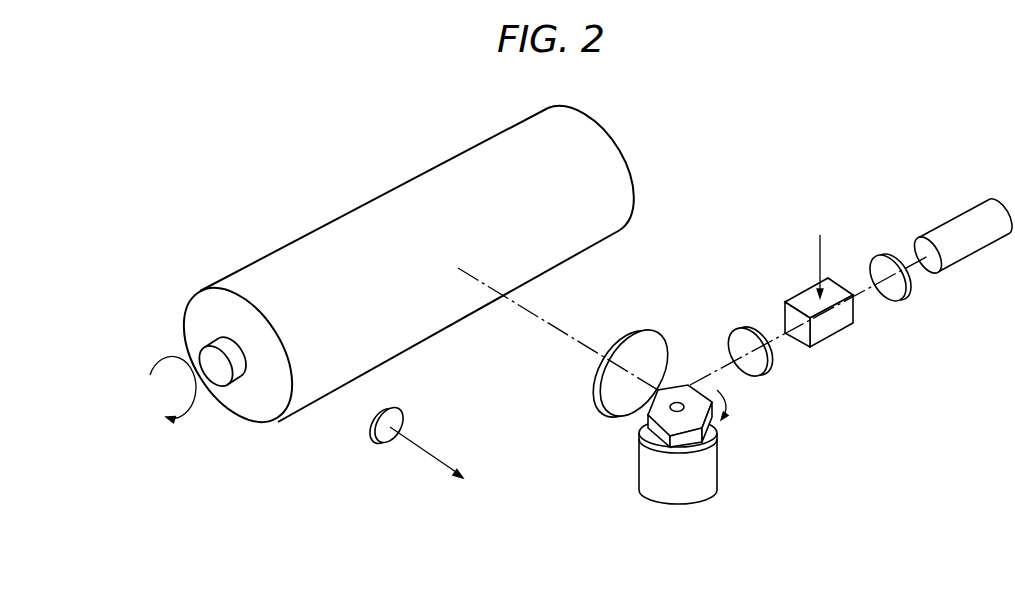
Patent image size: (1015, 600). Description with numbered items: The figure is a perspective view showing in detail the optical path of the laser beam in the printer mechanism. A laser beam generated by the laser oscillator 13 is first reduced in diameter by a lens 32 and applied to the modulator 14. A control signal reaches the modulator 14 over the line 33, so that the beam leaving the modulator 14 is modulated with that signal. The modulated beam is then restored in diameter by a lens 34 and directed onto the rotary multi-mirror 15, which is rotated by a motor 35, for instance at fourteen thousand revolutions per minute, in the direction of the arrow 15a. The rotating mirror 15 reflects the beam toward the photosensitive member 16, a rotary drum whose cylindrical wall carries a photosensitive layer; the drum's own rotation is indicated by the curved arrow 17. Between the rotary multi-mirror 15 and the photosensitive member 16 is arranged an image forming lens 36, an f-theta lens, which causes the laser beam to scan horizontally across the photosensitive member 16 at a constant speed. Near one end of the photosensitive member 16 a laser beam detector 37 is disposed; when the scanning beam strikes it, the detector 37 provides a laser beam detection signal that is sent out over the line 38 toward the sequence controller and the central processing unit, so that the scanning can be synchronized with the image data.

The laser oscillator 13 is at (957, 216).
The modulator 14 is at (836, 334).
The rotary multi-mirror 15 is at (689, 437).
The arrow 15a is at (731, 406).
The photosensitive member 16 is at (392, 190).
The rotation direction of drum 17 is at (164, 360).
The lens 32 is at (880, 258).
The line 33 is at (816, 249).
The lens 34 is at (748, 329).
The motor 35 is at (639, 466).
The image forming lens 36 is at (641, 330).
The laser beam detector 37 is at (388, 410).
The line 38 is at (420, 448).